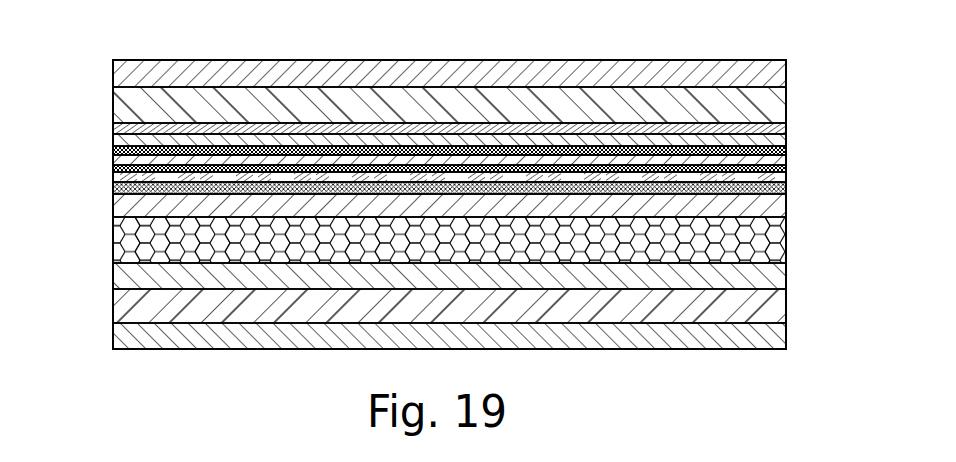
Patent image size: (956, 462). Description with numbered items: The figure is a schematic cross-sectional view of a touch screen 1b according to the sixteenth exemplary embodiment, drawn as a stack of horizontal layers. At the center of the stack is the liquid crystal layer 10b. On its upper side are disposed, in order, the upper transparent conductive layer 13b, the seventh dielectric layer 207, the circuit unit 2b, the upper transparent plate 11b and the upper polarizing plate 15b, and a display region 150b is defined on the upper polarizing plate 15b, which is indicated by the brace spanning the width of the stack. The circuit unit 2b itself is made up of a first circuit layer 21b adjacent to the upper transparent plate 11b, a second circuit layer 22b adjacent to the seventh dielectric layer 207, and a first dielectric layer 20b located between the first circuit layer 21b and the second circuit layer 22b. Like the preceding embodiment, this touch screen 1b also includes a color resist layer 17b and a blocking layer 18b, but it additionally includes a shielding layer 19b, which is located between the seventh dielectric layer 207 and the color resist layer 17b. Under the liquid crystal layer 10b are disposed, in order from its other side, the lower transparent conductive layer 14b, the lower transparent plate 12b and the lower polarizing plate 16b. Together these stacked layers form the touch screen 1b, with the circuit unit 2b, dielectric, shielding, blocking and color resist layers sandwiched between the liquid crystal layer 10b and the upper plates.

The display region 150b is at (113, 56).
The touch screen 1b is at (98, 62).
The circuit unit 2b is at (108, 137).
The upper polarizing plate 15b is at (150, 78).
The upper transparent plate 11b is at (150, 107).
The blocking layer 18b is at (786, 128).
The first circuit layer 21b is at (786, 141).
The first dielectric layer 20b is at (786, 151).
The second circuit layer 22b is at (786, 161).
The seventh dielectric layer 207 is at (786, 169).
The shielding layer 19b is at (786, 178).
The color resist layer 17b is at (786, 189).
The upper transparent conductive layer 13b is at (150, 208).
The liquid crystal layer 10b is at (150, 236).
The lower transparent conductive layer 14b is at (150, 277).
The lower transparent plate 12b is at (150, 300).
The lower polarizing plate 16b is at (150, 334).